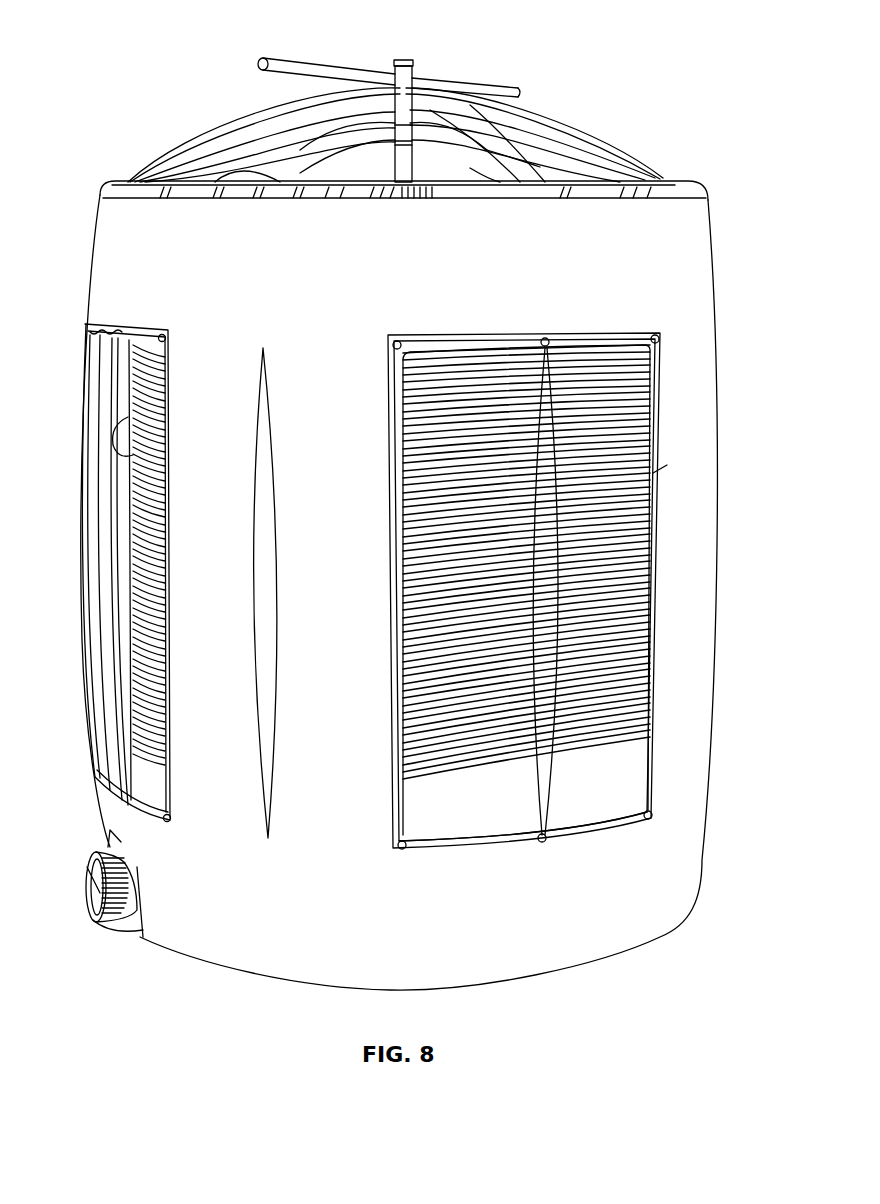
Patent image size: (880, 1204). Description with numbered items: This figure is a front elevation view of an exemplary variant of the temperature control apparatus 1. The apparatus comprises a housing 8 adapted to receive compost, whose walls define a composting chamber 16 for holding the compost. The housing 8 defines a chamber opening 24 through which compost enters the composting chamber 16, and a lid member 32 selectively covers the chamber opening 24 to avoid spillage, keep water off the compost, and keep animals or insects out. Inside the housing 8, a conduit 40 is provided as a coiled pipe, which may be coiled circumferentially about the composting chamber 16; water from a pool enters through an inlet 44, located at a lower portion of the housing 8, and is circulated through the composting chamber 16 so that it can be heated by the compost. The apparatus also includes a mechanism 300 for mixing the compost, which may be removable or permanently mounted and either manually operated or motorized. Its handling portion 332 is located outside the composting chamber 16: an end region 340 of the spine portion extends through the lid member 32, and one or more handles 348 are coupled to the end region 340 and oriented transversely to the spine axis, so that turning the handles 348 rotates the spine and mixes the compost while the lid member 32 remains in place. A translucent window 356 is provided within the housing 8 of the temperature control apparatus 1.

The temperature control apparatus 1 is at (137, 48).
The housing 8 is at (703, 221).
The chamber opening 24 is at (664, 178).
The lid member 32 is at (540, 111).
The mechanism for mixing the compost 300 is at (406, 39).
The end region of the spine portion 340 is at (415, 61).
The handling portion 332 is at (243, 67).
The handles 348 is at (483, 80).
The translucent window 356 is at (667, 437).
The composting chamber 16 is at (614, 820).
The conduit 40 is at (130, 420).
The inlet 44 is at (97, 898).